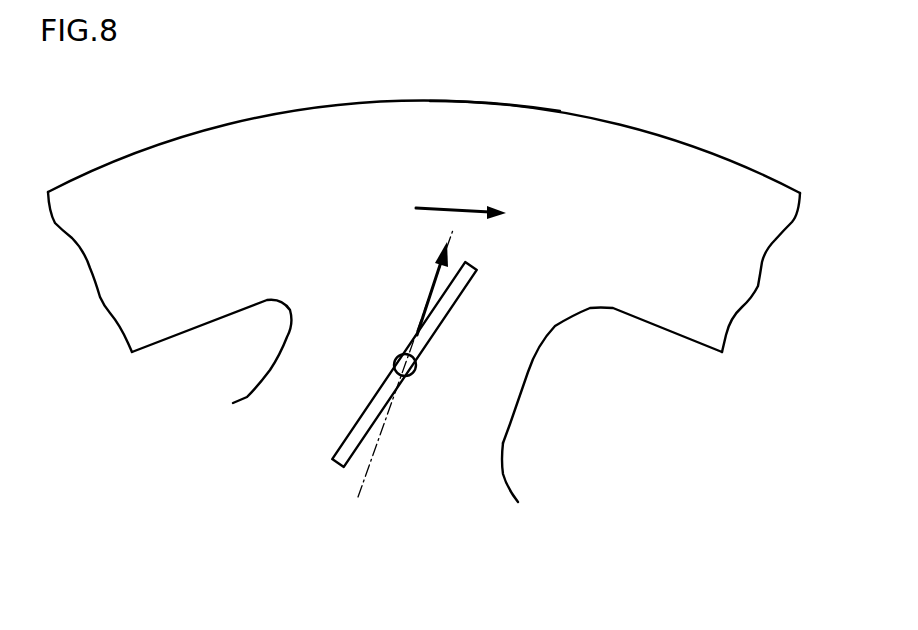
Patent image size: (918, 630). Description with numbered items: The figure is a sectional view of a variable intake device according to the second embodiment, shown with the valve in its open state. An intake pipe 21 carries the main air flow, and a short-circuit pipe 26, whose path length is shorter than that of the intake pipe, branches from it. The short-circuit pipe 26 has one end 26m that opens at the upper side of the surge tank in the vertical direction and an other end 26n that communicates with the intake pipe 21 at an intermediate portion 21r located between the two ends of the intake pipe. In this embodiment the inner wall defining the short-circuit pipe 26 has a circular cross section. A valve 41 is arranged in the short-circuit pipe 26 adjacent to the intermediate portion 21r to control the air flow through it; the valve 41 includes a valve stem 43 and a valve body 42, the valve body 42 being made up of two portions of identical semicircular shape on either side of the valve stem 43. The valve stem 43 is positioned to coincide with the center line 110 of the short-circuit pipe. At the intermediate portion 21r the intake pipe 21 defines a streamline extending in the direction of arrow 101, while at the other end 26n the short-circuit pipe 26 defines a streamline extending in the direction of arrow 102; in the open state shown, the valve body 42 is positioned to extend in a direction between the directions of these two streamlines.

The intake pipe 21 is at (288, 110).
The intermediate portion 21r is at (498, 165).
The short-circuit pipe 26 is at (280, 350).
The other end 26n is at (578, 314).
The one end 26m is at (517, 506).
The valve 41 is at (356, 421).
The valve body 42 is at (356, 432).
The valve stem 43 is at (395, 362).
The arrow 101 is at (451, 207).
The arrow 102 is at (432, 282).
The center line 110 is at (383, 427).